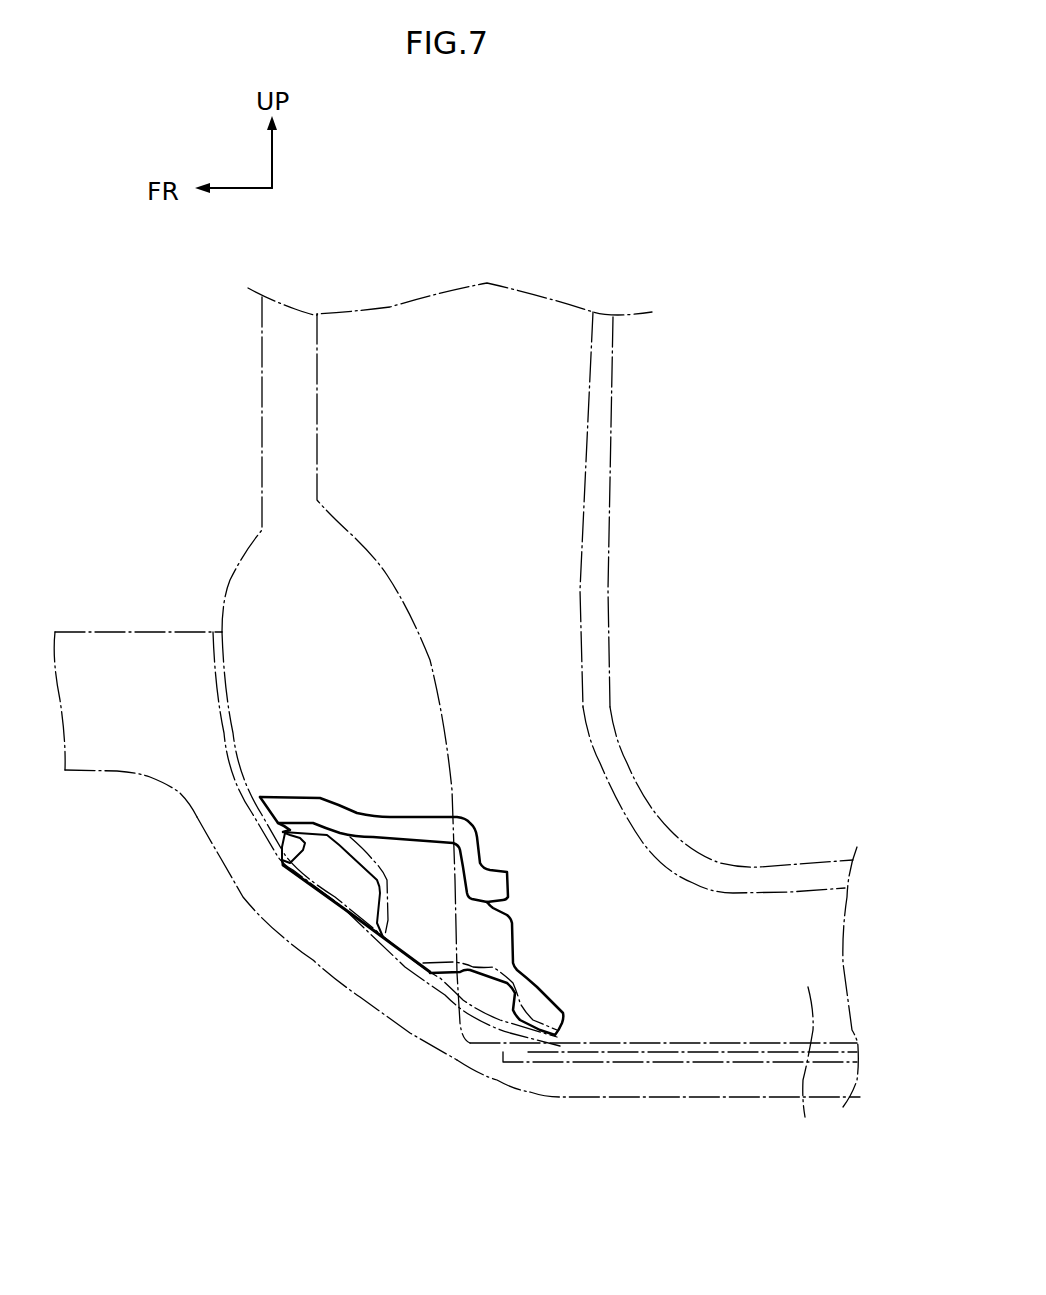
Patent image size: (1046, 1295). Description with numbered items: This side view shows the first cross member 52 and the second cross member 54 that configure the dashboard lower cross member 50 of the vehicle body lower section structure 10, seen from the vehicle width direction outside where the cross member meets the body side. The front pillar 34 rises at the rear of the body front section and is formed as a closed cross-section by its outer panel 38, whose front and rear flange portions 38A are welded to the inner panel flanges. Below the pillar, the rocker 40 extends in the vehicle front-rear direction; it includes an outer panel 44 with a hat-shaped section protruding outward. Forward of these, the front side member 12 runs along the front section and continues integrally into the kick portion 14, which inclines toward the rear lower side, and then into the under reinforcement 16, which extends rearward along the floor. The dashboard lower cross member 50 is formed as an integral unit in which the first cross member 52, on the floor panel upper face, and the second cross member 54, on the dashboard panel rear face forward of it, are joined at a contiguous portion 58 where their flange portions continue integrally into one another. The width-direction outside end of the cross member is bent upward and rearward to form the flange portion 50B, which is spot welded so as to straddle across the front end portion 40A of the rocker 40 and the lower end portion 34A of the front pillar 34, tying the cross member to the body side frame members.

The vehicle body lower section structure 10 is at (497, 1085).
The front side member 12 is at (128, 630).
The kick portion 14 is at (313, 958).
The under reinforcement 16 is at (720, 1097).
The front pillar 34 is at (618, 462).
The lower end portion of the front pillar 34A is at (297, 890).
The outer panel 38 is at (595, 393).
The flange portions of the outer panel 38A is at (600, 565).
The rocker 40 is at (808, 888).
The front end portion of the rocker 40A is at (457, 978).
The outer panel 44 is at (825, 1000).
The dashboard lower cross member 50 is at (473, 834).
The flange portion 50B is at (422, 828).
The first cross member 52 is at (520, 963).
The second cross member 54 is at (375, 868).
The contiguous portion 58 is at (410, 950).